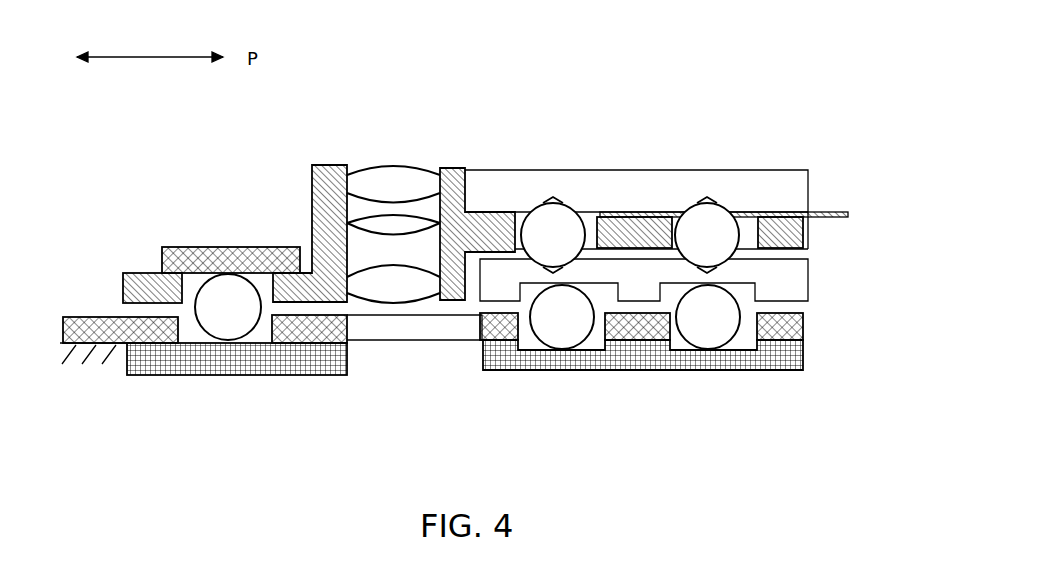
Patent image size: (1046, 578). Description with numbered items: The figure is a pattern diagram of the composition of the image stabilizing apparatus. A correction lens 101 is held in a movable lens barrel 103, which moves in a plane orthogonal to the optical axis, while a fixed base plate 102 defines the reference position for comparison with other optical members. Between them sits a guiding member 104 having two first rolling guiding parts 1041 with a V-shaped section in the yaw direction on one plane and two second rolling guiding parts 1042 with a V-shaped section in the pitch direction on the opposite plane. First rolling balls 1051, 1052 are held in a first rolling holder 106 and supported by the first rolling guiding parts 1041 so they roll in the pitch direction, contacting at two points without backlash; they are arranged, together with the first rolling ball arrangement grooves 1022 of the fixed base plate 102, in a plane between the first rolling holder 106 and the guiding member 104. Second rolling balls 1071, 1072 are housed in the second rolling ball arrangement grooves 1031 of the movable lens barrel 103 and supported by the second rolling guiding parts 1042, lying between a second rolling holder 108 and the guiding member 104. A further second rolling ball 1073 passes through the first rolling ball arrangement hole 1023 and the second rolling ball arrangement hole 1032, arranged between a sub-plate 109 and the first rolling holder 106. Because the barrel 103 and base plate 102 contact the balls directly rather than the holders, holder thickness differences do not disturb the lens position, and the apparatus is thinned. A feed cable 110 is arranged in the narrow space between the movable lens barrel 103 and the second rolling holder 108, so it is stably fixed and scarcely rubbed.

The correction lens 101 is at (397, 180).
The fixed base plate 102 is at (145, 335).
The movable lens barrel 103 is at (320, 205).
The guiding member 104 is at (783, 268).
The first rolling holder 106 is at (495, 360).
The second rolling holder 108 is at (620, 193).
The sub-plate 109 is at (250, 257).
The feed cable 110 is at (813, 212).
The first rolling ball arrangement grooves 1022 is at (673, 330).
The first rolling ball arrangement hole 1023 is at (262, 330).
The second rolling ball arrangement grooves 1031 is at (592, 232).
The second rolling ball arrangement hole 1032 is at (150, 288).
The first rolling guiding parts 1041 is at (482, 348).
The second rolling guiding parts 1042 is at (530, 272).
The first rolling ball 1051 is at (567, 332).
The first rolling ball 1052 is at (723, 323).
The second rolling ball 1071 is at (562, 235).
The second rolling ball 1072 is at (702, 233).
The second rolling ball 1073 is at (228, 307).